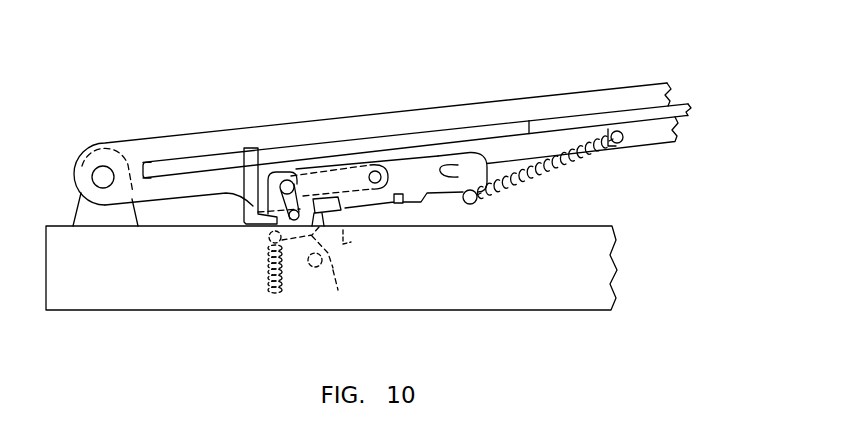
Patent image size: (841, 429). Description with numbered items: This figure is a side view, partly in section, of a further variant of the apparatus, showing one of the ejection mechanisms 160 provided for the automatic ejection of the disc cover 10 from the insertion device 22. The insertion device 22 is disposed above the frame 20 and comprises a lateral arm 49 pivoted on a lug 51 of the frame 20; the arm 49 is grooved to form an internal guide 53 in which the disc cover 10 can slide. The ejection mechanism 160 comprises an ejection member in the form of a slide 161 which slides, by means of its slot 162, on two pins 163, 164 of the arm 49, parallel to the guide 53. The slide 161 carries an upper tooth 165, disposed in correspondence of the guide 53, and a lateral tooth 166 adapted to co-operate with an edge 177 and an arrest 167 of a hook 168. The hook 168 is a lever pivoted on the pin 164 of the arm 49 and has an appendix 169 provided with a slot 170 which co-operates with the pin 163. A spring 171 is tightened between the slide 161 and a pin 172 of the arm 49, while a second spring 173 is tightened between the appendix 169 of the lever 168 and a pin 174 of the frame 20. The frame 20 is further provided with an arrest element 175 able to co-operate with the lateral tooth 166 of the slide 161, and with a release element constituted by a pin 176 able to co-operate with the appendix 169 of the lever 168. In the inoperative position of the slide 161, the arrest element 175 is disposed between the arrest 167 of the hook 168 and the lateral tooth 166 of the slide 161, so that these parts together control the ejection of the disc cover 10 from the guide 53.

The disc cover 10 is at (676, 112).
The frame 20 is at (78, 299).
The insertion device 22 is at (617, 60).
The lateral arm 49 is at (660, 135).
The lug 51 is at (83, 215).
The guide 53 is at (149, 167).
The ejection mechanism 160 is at (376, 76).
The slide 161 is at (468, 152).
The slot 162 is at (440, 179).
The pin 163 is at (280, 165).
The pin 164 is at (378, 171).
The upper tooth 165 is at (247, 148).
The lateral tooth 166 is at (398, 203).
The arrest 167 is at (343, 210).
The hook 168 is at (330, 170).
The appendix 169 is at (321, 253).
The slot 170 is at (244, 214).
The spring 171 is at (567, 160).
The pin 172 is at (619, 146).
The spring 173 is at (268, 268).
The pin 174 is at (279, 298).
The arrest element 175 is at (349, 244).
The pin 176 is at (338, 291).
The edge 177 is at (367, 209).